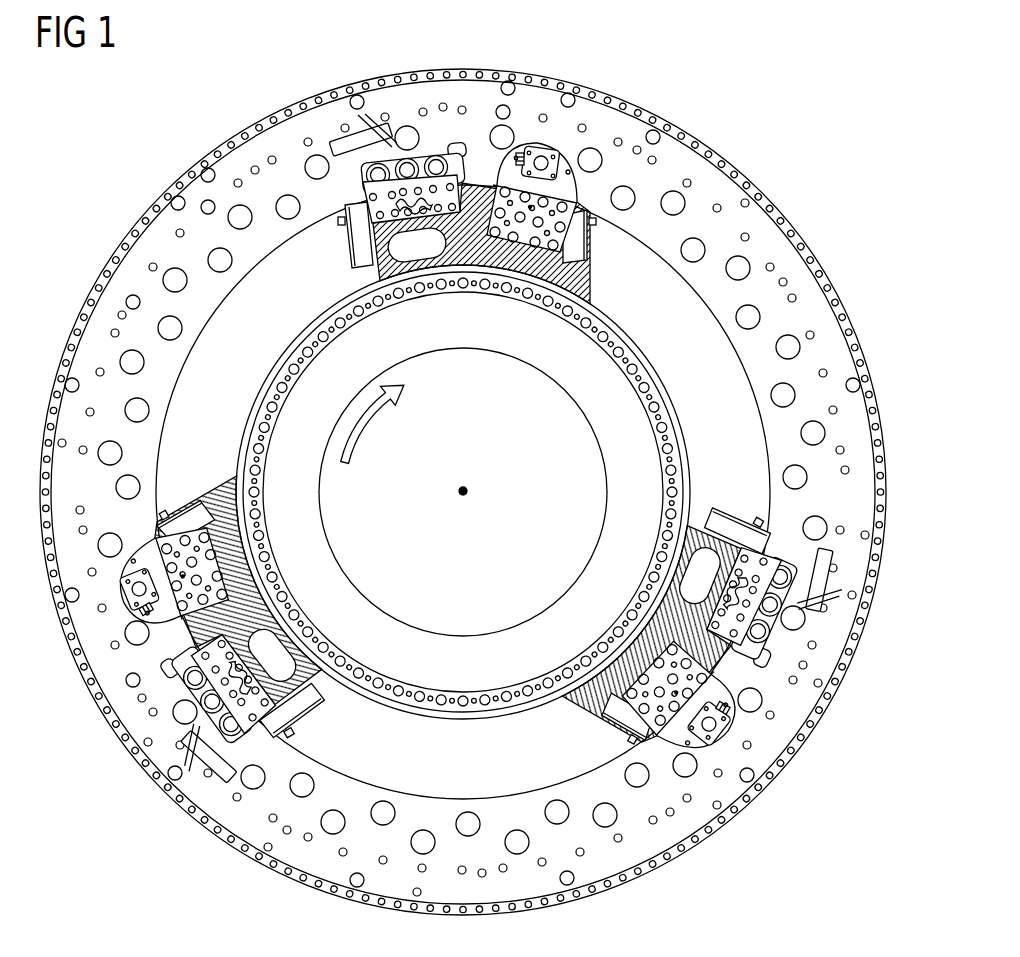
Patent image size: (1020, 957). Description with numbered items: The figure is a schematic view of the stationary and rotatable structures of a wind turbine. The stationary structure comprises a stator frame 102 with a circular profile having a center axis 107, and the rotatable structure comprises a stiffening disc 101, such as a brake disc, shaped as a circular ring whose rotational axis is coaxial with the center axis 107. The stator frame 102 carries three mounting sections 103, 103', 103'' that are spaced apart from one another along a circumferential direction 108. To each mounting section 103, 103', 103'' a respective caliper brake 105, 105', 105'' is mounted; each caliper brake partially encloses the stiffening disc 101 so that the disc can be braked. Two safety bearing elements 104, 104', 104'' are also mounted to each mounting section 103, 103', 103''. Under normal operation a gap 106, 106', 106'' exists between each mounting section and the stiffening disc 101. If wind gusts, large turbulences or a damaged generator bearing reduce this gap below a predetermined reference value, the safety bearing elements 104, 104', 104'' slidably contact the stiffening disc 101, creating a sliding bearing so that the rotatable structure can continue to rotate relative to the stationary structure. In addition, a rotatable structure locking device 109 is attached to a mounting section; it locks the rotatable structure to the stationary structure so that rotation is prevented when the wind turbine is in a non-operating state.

The stiffening disc 101 is at (630, 132).
The stator frame 102 is at (663, 380).
The mounting section 103 is at (481, 289).
The mounting section 103' is at (651, 632).
The mounting section 103'' is at (266, 600).
The safety bearing element 104 is at (471, 243).
The safety bearing element 104' is at (666, 609).
The safety bearing element 104'' is at (262, 597).
The caliper brake 105 is at (393, 133).
The caliper brake 105' is at (782, 633).
The caliper brake 105'' is at (202, 727).
The gap 106 is at (507, 138).
The gap 106' is at (724, 718).
The gap 106'' is at (140, 627).
The center axis 107 is at (467, 487).
The circumferential direction 108 is at (363, 423).
The rotatable structure locking device 109 is at (560, 111).